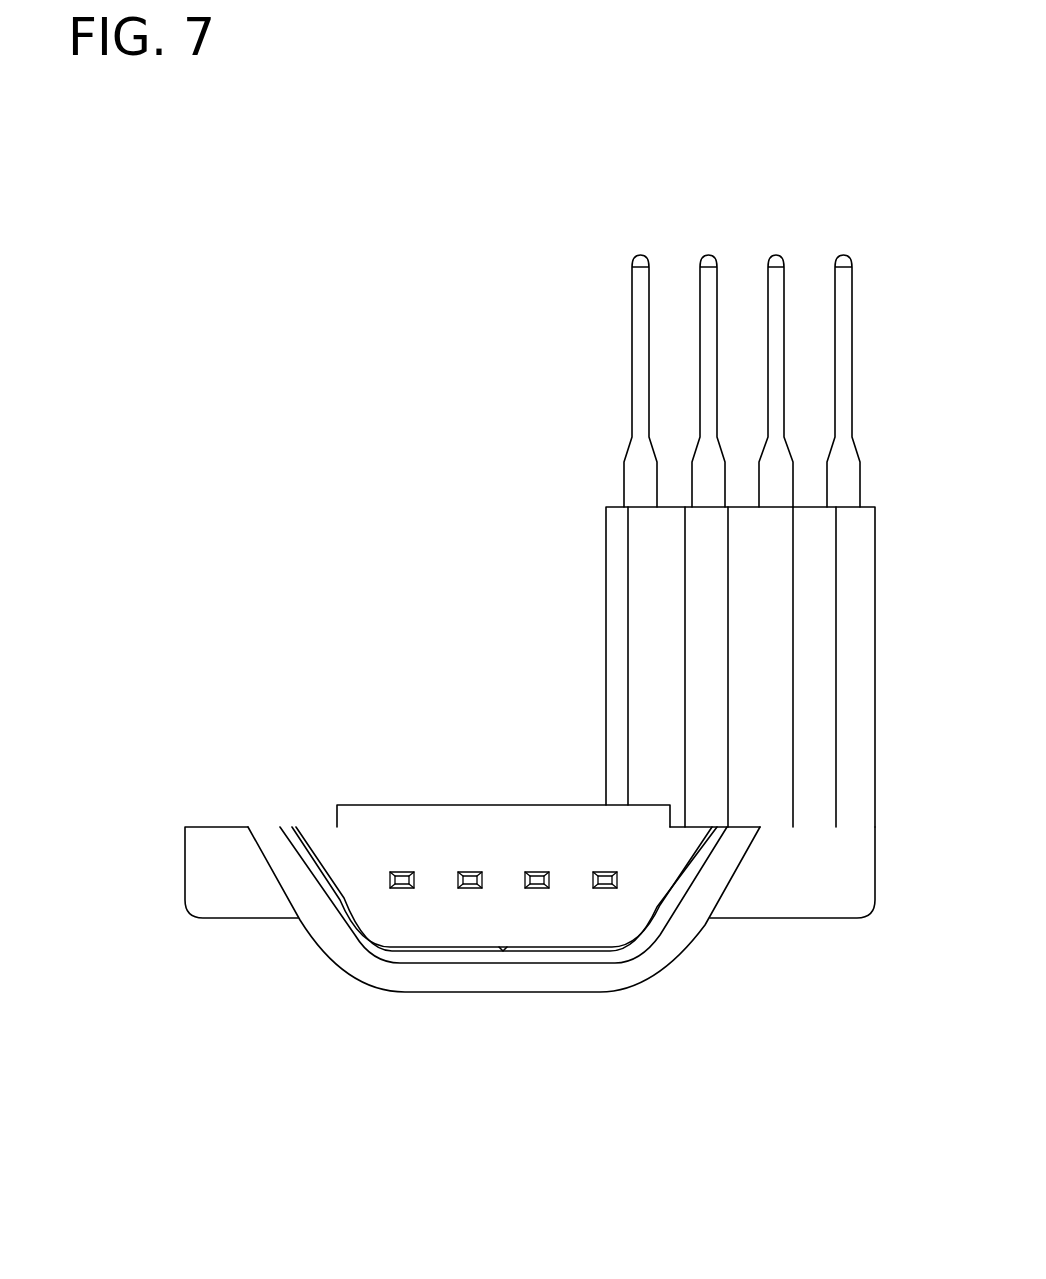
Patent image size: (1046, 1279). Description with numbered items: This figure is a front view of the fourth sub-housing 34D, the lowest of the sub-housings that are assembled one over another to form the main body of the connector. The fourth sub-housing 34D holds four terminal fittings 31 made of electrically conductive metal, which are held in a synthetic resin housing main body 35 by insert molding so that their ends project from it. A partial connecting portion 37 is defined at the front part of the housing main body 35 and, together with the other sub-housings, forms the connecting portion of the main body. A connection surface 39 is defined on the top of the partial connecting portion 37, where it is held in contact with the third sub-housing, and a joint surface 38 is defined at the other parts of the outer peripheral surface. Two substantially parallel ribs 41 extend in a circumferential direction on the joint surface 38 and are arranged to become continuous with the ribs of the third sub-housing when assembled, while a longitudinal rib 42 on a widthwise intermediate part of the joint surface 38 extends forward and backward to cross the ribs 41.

The fourth sub-housing 34D is at (237, 332).
The terminal fitting 31 is at (847, 305).
The housing main body 35 is at (550, 977).
The partial connecting portion 37 is at (372, 958).
The joint surface 38 is at (435, 947).
The connection surface 39 is at (378, 805).
The rib 41 is at (470, 953).
The longitudinal rib 42 is at (503, 949).